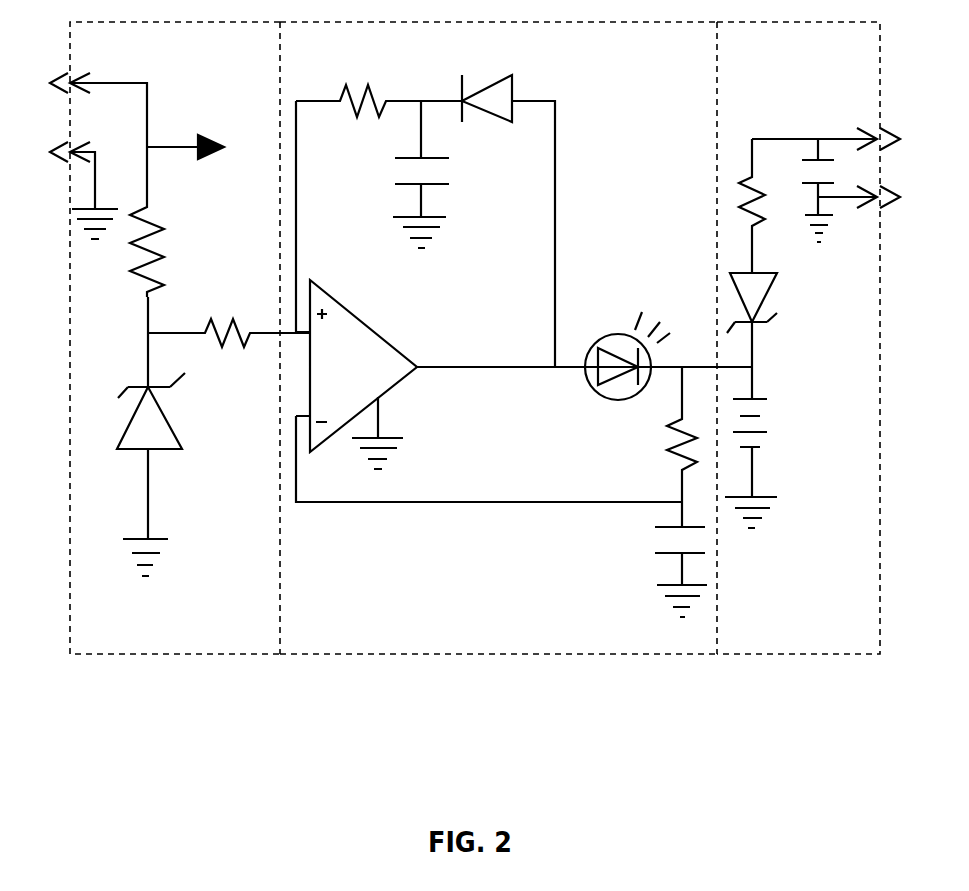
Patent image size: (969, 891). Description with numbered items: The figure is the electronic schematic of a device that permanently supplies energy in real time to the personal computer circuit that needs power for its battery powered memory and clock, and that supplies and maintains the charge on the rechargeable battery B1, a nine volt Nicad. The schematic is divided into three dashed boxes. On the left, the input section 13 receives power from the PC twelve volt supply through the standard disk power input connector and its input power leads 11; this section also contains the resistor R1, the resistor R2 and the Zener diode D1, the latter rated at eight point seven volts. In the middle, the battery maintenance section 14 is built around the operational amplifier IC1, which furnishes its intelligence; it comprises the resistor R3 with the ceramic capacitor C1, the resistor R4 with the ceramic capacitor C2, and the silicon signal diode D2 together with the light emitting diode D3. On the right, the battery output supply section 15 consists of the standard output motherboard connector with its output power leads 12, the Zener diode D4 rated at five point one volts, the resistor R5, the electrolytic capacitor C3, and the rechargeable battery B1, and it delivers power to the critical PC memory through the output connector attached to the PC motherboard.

The input power leads 11 is at (95, 183).
The output power leads 12 is at (850, 138).
The input section 13 is at (175, 617).
The battery maintenance section 14 is at (397, 620).
The battery output supply section 15 is at (803, 633).
The resistor R1 is at (170, 250).
The resistor R2 is at (229, 316).
The resistor R3 is at (379, 86).
The resistor R4 is at (662, 434).
The resistor R5 is at (762, 193).
The ceramic capacitor C1 is at (403, 174).
The ceramic capacitor C2 is at (658, 559).
The electrolytic capacitor C3 is at (800, 190).
The Zener diode D1 is at (134, 436).
The silicon signal diode D2 is at (508, 204).
The light emitting diode D3 is at (622, 353).
The Zener diode D4 is at (774, 336).
The operational amplifier IC1 is at (523, 301).
The rechargeable battery B1 is at (768, 463).